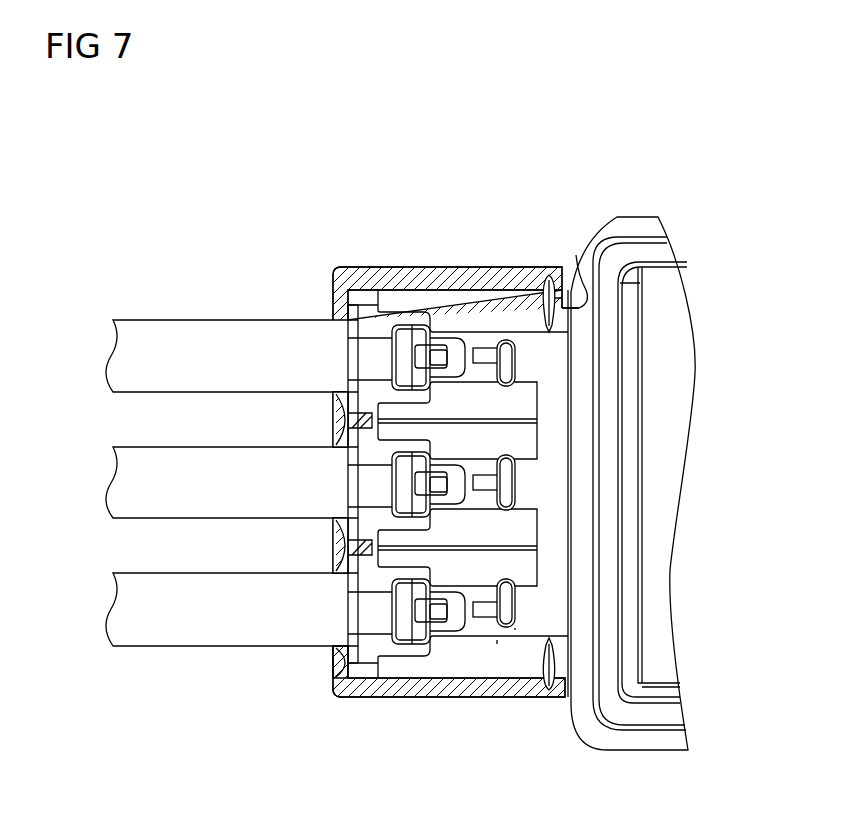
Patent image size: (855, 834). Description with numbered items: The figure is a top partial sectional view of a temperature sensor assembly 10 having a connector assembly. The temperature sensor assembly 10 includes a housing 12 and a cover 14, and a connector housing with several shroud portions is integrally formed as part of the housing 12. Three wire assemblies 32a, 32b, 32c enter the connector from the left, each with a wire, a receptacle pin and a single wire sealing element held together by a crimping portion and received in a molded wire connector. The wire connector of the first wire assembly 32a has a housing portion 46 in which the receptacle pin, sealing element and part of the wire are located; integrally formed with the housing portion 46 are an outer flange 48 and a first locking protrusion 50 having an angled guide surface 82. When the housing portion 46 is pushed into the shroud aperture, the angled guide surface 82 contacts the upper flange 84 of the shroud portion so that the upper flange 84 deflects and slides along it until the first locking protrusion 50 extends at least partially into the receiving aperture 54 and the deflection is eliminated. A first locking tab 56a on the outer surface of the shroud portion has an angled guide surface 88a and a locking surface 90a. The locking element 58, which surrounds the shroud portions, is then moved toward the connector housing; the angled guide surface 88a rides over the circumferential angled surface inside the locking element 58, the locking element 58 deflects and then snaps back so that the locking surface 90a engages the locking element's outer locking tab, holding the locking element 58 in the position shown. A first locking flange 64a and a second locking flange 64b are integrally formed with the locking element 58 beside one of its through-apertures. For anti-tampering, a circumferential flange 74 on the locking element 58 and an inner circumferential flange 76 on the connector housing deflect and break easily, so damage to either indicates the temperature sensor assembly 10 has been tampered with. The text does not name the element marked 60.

The temperature sensor assembly 10 is at (252, 162).
The housing 12 is at (633, 442).
The cover 14 is at (700, 482).
The wire assembly 32a is at (227, 586).
The wire assembly 32b is at (227, 459).
The wire assembly 32c is at (227, 333).
The housing portion 46 is at (305, 660).
The outer flange 48 is at (327, 729).
The first locking protrusion 50 is at (426, 680).
The receiving aperture 54 is at (450, 684).
The first locking tab 56a is at (532, 674).
The locking element 58 is at (456, 428).
The housing top wall 60 is at (447, 252).
The first locking flange 64a is at (299, 698).
The second locking flange 64b is at (258, 498).
The circumferential flange 74 is at (536, 432).
The inner circumferential flange 76 is at (572, 221).
The angled guide surface 82 is at (433, 690).
The upper flange 84 is at (387, 690).
The angled guide surface 88a is at (501, 701).
The locking surface 90a is at (635, 614).